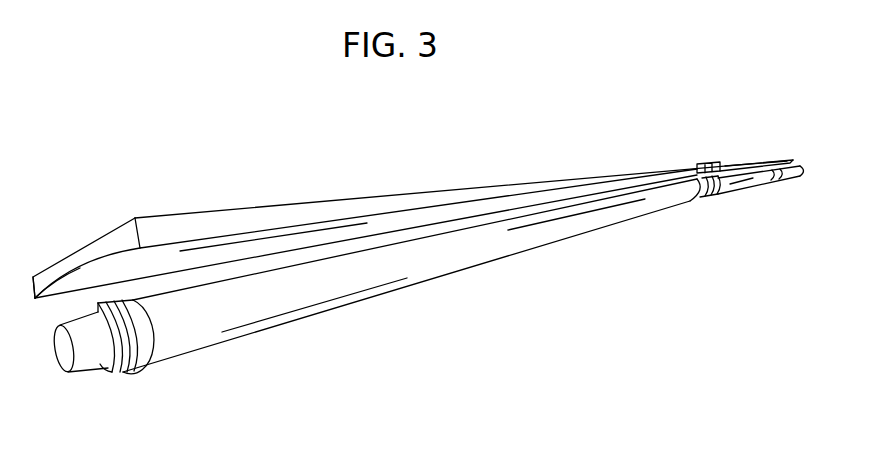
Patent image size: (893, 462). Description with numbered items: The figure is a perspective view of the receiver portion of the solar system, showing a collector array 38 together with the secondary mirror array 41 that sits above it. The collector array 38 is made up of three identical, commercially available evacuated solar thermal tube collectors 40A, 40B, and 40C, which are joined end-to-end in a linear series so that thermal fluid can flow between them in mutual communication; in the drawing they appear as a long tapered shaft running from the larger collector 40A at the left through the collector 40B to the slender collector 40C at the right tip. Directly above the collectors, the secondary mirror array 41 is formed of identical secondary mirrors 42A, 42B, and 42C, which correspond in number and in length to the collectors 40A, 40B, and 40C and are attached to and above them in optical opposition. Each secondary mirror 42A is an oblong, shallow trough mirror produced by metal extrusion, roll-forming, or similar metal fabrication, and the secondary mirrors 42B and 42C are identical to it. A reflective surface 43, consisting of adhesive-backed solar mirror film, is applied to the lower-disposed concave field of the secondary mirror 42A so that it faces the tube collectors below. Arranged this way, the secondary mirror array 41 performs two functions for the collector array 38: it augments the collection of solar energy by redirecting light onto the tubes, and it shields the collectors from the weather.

The collector array 38 is at (400, 308).
The evacuated solar thermal tube collector 40A is at (510, 257).
The evacuated solar thermal tube collector 40B is at (737, 190).
The evacuated solar thermal tube collector 40C is at (792, 180).
The secondary mirror array 41 is at (197, 173).
The secondary mirror 42A is at (378, 194).
The secondary mirror 42B is at (720, 163).
The secondary mirror 42C is at (785, 157).
The reflective surface 43 is at (105, 275).